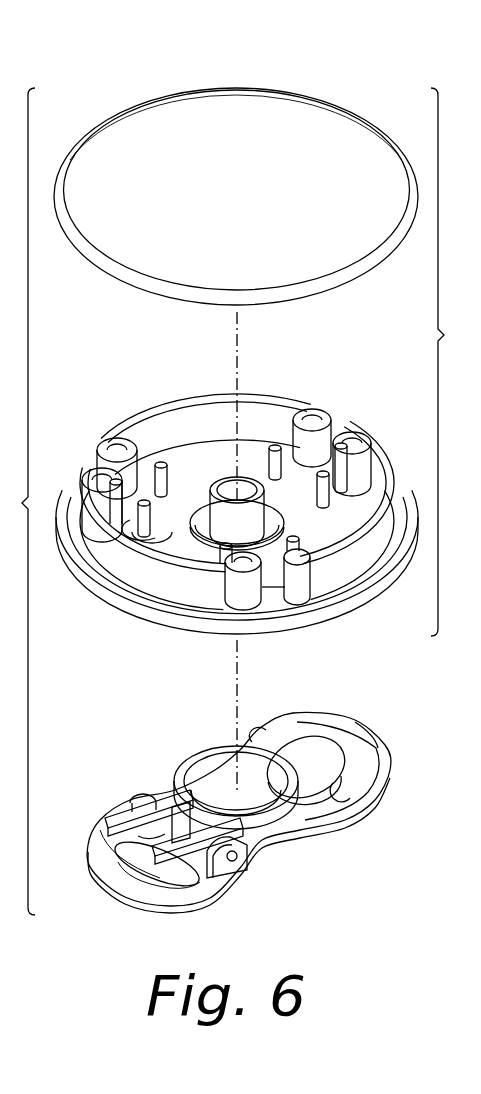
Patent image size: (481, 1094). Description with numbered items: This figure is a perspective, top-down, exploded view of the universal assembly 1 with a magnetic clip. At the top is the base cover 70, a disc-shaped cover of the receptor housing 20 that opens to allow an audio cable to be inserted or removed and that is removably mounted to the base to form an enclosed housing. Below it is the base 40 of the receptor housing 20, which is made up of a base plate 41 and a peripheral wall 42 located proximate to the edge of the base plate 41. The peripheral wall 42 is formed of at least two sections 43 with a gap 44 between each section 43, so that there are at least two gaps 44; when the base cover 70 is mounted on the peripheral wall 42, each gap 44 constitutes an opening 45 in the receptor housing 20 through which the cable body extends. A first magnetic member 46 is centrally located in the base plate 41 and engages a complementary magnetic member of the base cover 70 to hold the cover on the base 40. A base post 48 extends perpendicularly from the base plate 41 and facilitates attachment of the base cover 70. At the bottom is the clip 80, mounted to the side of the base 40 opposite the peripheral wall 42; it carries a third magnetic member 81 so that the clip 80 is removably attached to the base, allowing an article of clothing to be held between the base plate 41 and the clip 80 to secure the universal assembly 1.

The universal assembly 1 is at (20, 501).
The receptor housing 20 is at (451, 362).
The base cover 70 is at (245, 86).
The base 40 is at (121, 397).
The base plate 41 is at (102, 603).
The peripheral wall 42 is at (237, 519).
The sections 43 is at (180, 590).
The gap 44 is at (377, 430).
The openings 45 is at (277, 593).
The first magnetic member 46 is at (228, 492).
The base post 48 is at (163, 538).
The clip 80 is at (239, 807).
The third magnetic member 81 is at (220, 786).